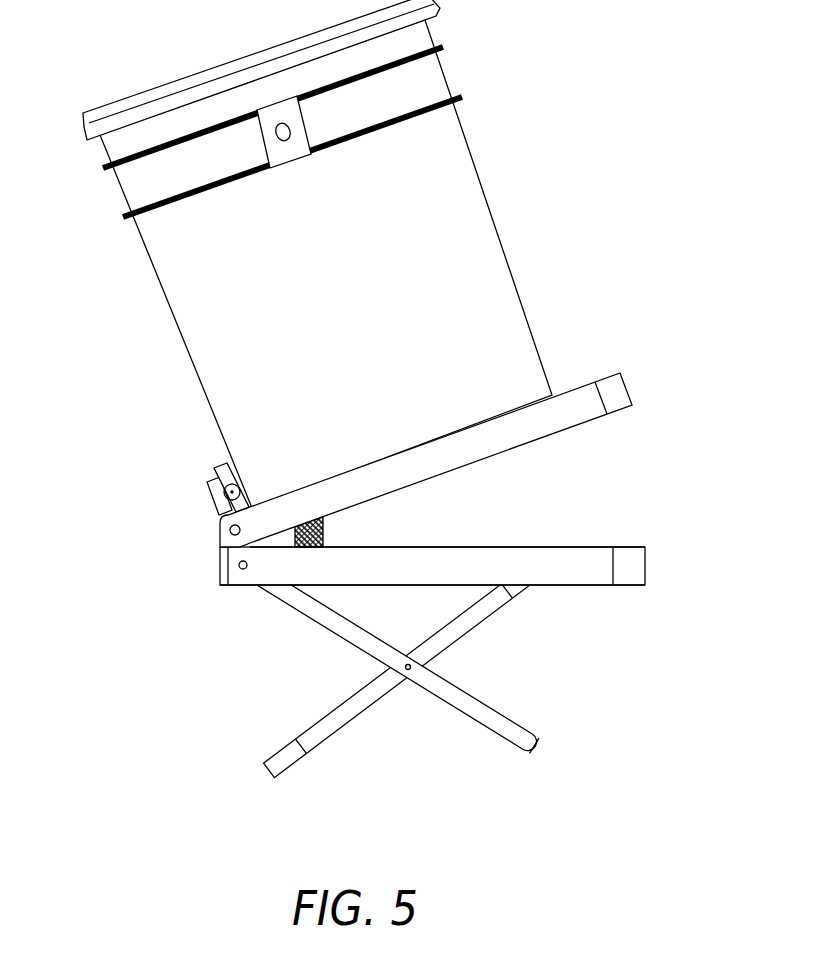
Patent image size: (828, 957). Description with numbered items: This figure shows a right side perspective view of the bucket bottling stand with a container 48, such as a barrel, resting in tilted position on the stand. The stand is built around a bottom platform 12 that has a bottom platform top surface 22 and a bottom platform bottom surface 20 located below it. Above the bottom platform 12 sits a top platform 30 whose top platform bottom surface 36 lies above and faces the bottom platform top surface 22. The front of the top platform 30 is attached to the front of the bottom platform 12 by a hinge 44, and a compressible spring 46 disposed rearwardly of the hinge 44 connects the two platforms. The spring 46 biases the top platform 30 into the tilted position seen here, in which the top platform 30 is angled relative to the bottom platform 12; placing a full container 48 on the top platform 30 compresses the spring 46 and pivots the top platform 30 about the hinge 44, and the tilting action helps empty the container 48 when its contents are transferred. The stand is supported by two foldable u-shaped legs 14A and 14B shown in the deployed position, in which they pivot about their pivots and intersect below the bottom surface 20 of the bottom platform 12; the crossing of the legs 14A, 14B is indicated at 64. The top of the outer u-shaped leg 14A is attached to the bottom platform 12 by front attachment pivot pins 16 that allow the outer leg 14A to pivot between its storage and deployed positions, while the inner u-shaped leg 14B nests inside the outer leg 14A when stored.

The bottom platform 12 is at (639, 568).
The outer u-shaped leg 14A is at (513, 733).
The inner u-shaped leg 14B is at (447, 637).
The front attachment pivot pin 16 is at (241, 569).
The bottom platform bottom surface 20 is at (622, 586).
The bottom platform top surface 22 is at (623, 547).
The top platform 30 is at (622, 388).
The top platform bottom surface 36 is at (583, 420).
The hinge 44 is at (230, 532).
The compressible spring 46 is at (330, 533).
The container 48 is at (480, 175).
The leg crossing pivot 64 is at (410, 677).